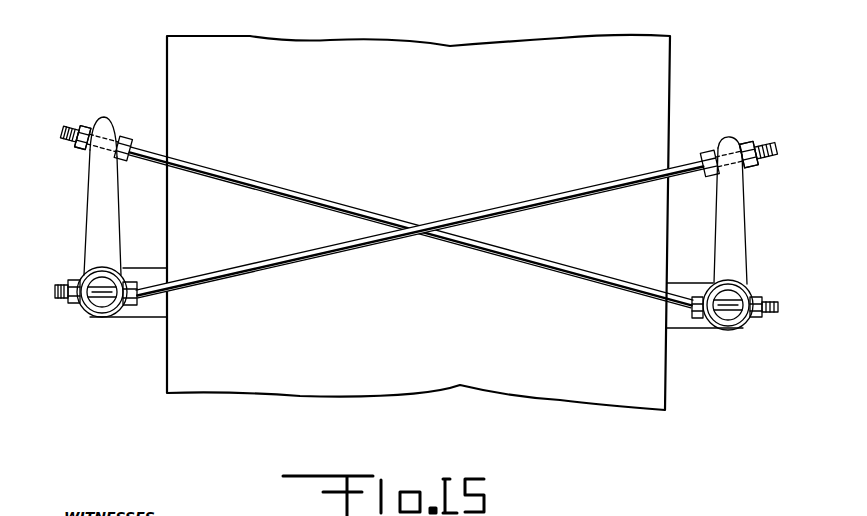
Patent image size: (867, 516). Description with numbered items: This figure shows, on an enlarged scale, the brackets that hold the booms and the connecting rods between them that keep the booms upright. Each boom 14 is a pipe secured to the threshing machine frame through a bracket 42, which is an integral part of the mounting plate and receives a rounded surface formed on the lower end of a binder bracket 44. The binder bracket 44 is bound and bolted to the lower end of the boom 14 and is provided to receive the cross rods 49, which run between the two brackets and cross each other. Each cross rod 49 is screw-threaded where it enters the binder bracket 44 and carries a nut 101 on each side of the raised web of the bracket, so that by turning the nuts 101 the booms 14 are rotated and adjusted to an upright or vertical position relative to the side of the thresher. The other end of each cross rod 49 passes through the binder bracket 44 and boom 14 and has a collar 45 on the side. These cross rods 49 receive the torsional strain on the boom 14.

The boom 14 is at (107, 309).
The bracket 42 is at (141, 274).
The binder bracket 44 is at (105, 124).
The collar 45 is at (72, 301).
The cross rod 49 is at (273, 190).
The nut 101 is at (85, 128).